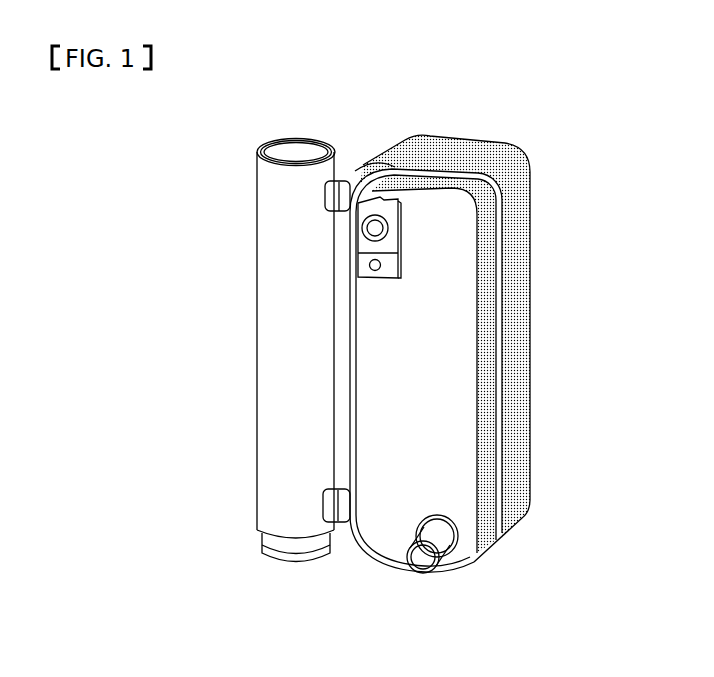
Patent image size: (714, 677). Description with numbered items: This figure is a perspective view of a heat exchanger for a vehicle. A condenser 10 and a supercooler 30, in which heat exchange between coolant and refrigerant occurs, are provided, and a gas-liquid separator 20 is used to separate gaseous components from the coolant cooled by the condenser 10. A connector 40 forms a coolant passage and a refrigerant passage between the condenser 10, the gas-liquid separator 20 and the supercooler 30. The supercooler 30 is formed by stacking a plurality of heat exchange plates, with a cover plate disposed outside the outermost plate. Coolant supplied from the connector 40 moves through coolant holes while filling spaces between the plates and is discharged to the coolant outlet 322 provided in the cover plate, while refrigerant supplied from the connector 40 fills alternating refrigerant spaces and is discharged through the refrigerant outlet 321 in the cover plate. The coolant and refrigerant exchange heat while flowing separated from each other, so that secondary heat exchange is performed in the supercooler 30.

The condenser 10 is at (525, 530).
The gas-liquid separator 20 is at (288, 310).
The supercooler 30 is at (483, 565).
The connector 40 is at (497, 552).
The refrigerant outlet 321 is at (363, 233).
The coolant outlet 322 is at (418, 567).